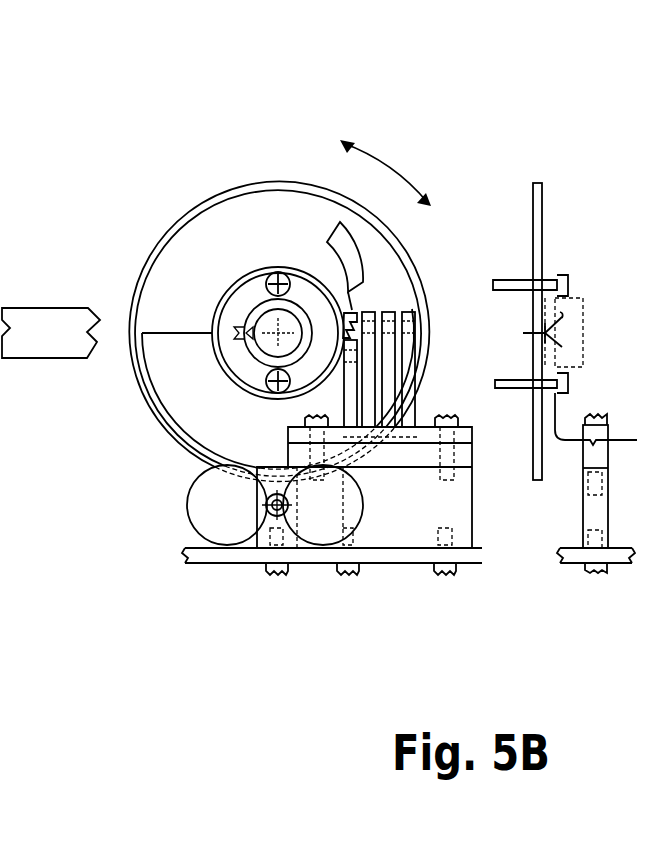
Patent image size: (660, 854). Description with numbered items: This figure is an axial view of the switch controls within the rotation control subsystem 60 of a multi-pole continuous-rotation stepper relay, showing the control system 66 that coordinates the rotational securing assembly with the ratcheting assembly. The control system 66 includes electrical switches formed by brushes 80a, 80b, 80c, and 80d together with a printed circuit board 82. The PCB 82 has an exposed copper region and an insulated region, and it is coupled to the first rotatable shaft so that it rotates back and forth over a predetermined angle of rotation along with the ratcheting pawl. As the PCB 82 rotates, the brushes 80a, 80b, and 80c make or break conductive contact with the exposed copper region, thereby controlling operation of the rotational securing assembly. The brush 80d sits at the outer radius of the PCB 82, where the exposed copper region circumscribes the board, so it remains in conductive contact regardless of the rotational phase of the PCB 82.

The rotation control subsystem 60 is at (163, 104).
The printed circuit board 82 is at (258, 185).
The brush 80a is at (353, 307).
The brush 80b is at (375, 312).
The brush 80c is at (390, 380).
The brush 80d is at (412, 398).
The control system 66 is at (383, 572).